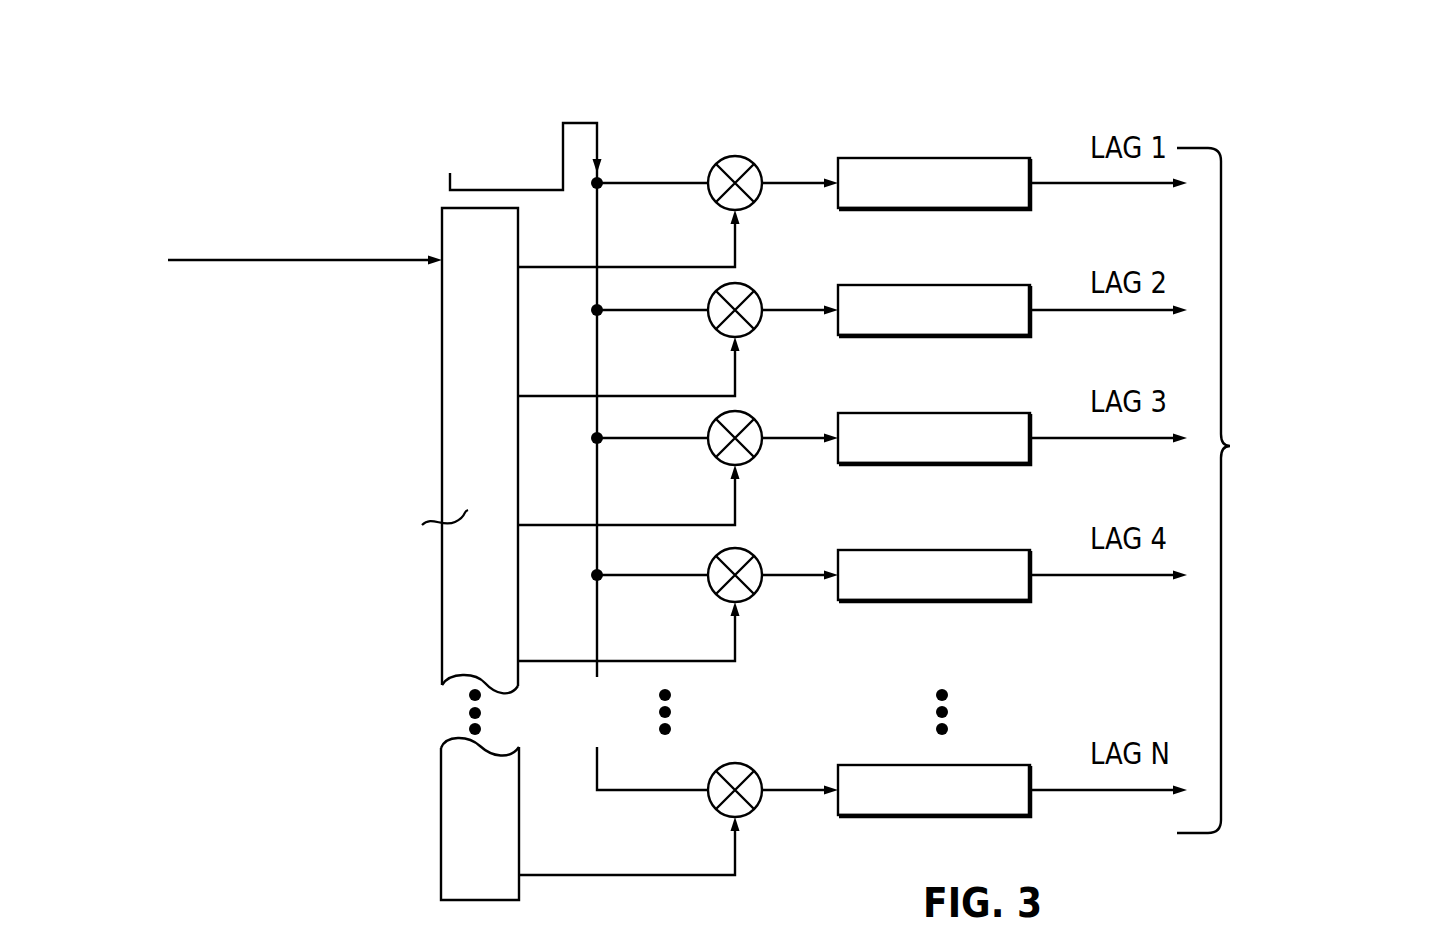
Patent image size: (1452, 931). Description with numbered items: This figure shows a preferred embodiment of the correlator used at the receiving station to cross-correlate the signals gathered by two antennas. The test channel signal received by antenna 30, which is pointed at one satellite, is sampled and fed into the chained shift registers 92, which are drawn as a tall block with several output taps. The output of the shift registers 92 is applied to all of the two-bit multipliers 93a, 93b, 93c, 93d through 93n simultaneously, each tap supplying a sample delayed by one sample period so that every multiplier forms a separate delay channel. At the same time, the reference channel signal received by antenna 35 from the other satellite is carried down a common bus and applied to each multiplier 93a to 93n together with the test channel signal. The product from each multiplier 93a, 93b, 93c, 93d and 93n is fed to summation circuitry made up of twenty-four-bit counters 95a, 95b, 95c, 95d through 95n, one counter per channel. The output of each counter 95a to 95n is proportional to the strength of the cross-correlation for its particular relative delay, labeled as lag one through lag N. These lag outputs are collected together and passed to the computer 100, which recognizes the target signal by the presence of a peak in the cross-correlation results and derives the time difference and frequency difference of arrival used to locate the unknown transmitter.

The antenna 30 is at (276, 188).
The antenna 35 is at (558, 412).
The chained shift registers 92 is at (462, 812).
The two-bit multiplier 93a is at (748, 158).
The two-bit multiplier 93b is at (756, 292).
The two-bit multiplier 93c is at (758, 420).
The two-bit multiplier 93d is at (758, 557).
The two-bit multiplier 93n is at (753, 768).
The counter 95a is at (982, 158).
The counter 95b is at (948, 285).
The counter 95c is at (948, 413).
The counter 95d is at (948, 550).
The counter 95n is at (1008, 765).
The computer 100 is at (1229, 446).